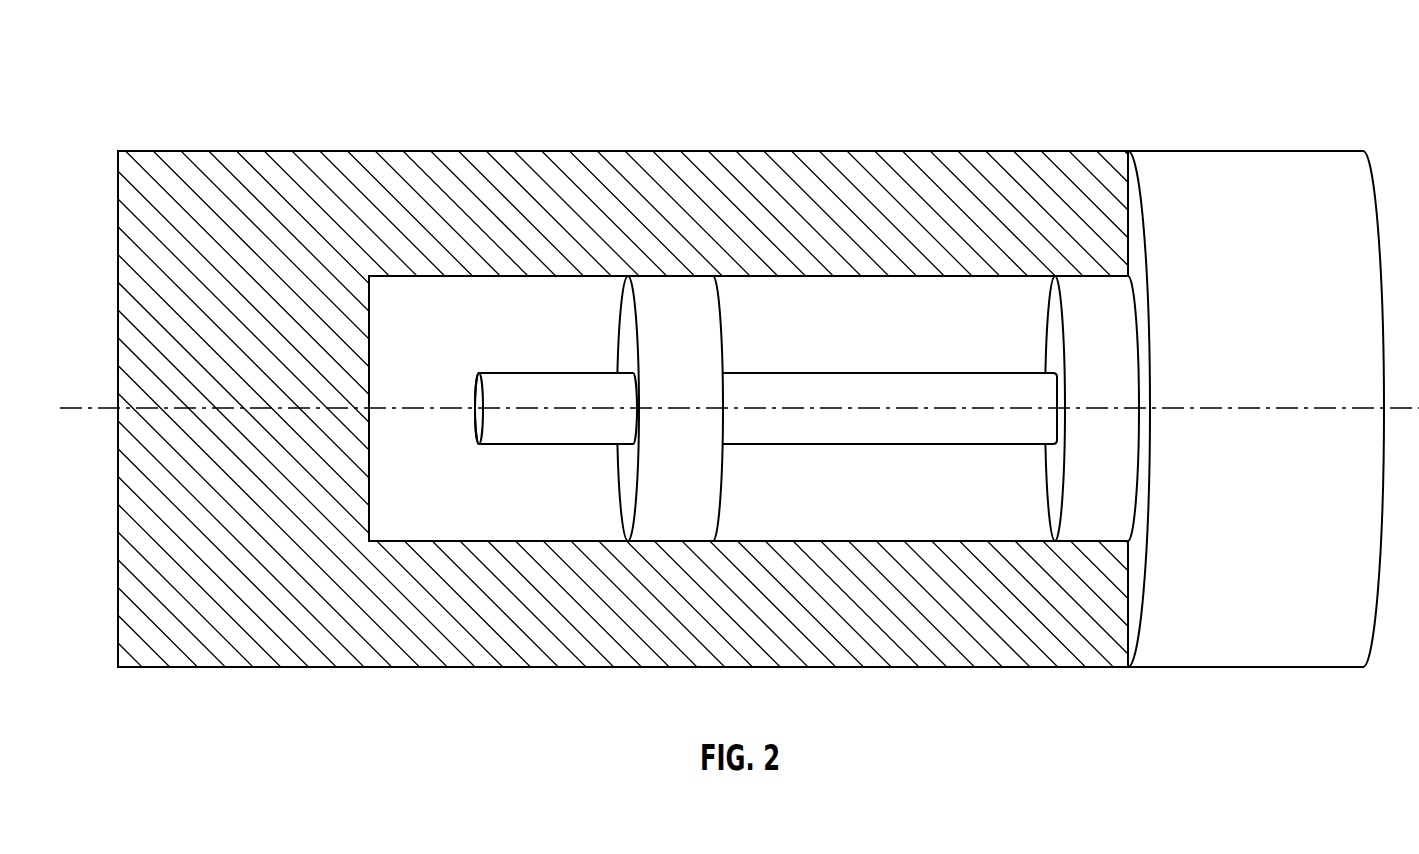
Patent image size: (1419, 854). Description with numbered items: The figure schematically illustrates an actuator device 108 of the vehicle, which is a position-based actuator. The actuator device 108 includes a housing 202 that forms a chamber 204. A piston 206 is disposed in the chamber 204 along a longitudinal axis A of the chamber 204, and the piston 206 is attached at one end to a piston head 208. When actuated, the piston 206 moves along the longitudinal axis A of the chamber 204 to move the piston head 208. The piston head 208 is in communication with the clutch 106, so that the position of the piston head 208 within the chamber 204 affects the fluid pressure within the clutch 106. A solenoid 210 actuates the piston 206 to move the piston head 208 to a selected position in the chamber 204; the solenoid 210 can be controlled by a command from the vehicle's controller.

The clutch 106 is at (1274, 356).
The actuator device 108 is at (127, 33).
The housing 202 is at (625, 152).
The chamber 204 is at (440, 273).
The piston 206 is at (820, 373).
The piston head 208 is at (1055, 312).
The solenoid 210 is at (625, 310).
The longitudinal axis A is at (83, 408).